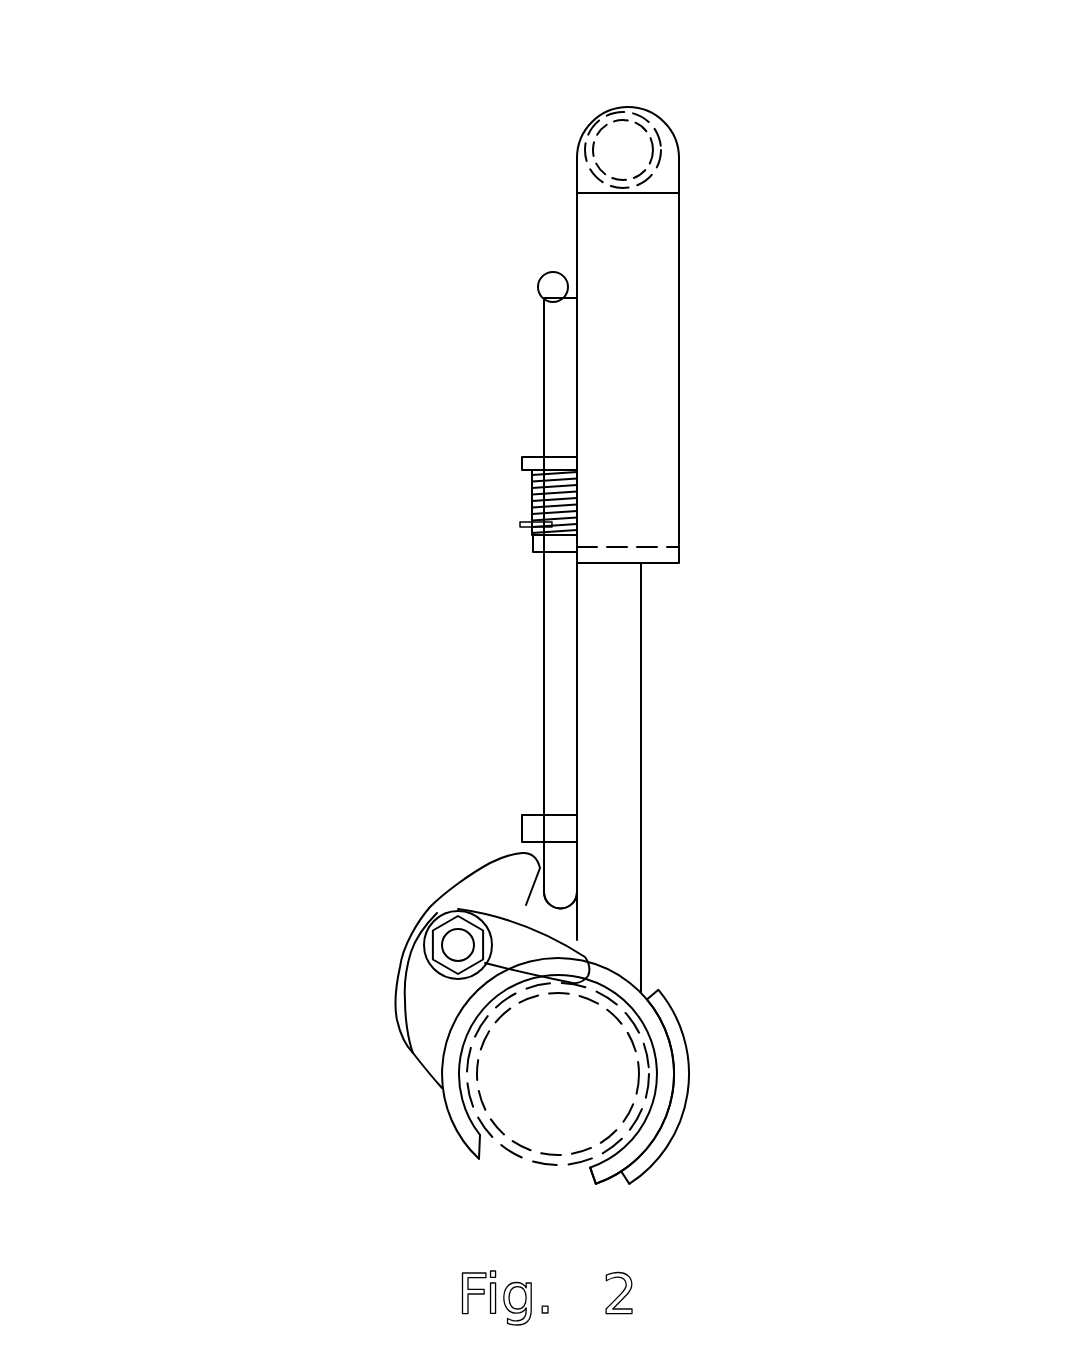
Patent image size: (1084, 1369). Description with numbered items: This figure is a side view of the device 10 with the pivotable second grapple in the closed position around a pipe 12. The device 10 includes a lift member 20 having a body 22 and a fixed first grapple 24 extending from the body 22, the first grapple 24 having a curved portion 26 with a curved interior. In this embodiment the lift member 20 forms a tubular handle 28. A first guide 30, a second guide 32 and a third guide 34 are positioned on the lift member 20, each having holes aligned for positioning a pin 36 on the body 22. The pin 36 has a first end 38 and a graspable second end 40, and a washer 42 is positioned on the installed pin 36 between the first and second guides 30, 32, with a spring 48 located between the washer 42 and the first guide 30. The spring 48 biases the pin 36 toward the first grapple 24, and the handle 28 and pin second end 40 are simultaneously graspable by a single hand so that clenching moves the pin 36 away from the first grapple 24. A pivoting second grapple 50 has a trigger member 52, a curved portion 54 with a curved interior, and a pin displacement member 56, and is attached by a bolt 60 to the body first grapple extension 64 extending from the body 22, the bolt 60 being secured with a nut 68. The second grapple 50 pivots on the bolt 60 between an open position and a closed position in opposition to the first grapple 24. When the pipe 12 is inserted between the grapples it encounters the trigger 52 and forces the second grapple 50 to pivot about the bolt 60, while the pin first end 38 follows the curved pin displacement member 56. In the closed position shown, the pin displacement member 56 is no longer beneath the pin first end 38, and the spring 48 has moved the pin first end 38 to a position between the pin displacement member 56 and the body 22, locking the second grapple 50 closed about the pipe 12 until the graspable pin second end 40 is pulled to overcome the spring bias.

The device 10 is at (402, 157).
The pipe 12 is at (522, 1155).
The lift member 20 is at (727, 285).
The body 22 is at (641, 663).
The fixed first grapple 24 is at (680, 1027).
The curved portion 26 is at (608, 1177).
The tubular handle 28 is at (642, 107).
The first guide 30 is at (522, 458).
The second guide 32 is at (533, 540).
The third guide 34 is at (537, 815).
The pin 36 is at (542, 647).
The pin first end 38 is at (527, 943).
The graspable pin second end 40 is at (543, 278).
The washer 42 is at (518, 477).
The spring 48 is at (532, 513).
The pivoting second grapple 50 is at (355, 1028).
The trigger member 52 is at (592, 952).
The curved portion 54 is at (452, 1117).
The pin displacement member 56 is at (498, 858).
The bolt 60 is at (437, 920).
The body first grapple extension 64 is at (641, 932).
The nut 68 is at (440, 937).